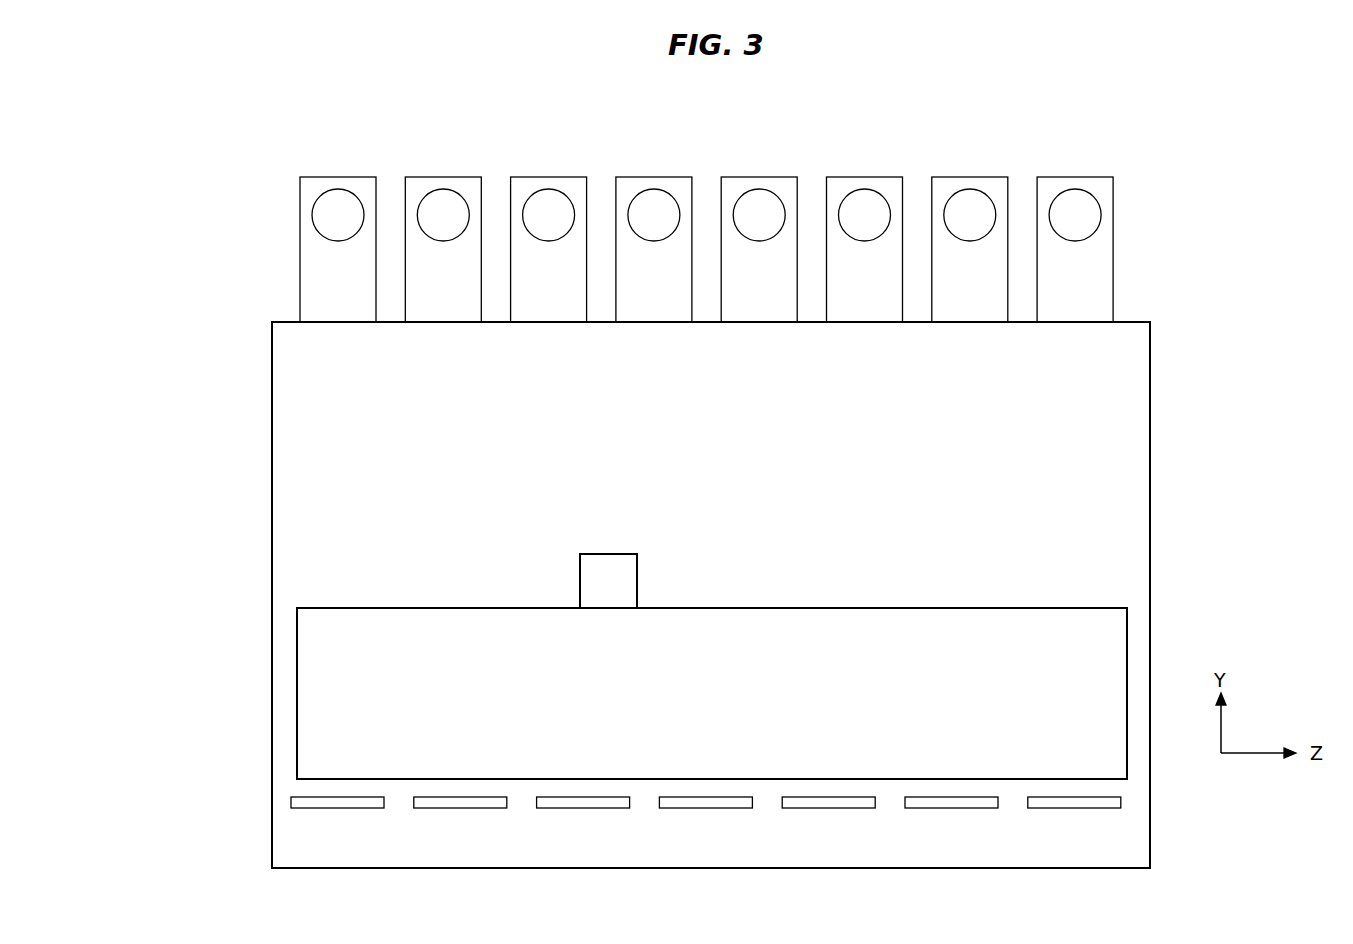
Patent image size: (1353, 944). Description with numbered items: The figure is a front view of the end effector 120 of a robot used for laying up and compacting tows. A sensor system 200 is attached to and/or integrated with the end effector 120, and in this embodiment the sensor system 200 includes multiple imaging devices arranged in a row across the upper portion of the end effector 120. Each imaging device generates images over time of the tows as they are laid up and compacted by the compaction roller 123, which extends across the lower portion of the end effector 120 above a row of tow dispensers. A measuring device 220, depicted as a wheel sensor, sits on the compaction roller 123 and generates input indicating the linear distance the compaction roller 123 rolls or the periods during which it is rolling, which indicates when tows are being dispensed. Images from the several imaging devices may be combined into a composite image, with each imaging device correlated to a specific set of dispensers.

The end effector 120 is at (1237, 495).
The compaction roller 123 is at (816, 607).
The sensor system 200 is at (236, 217).
The measuring device 220 is at (614, 552).